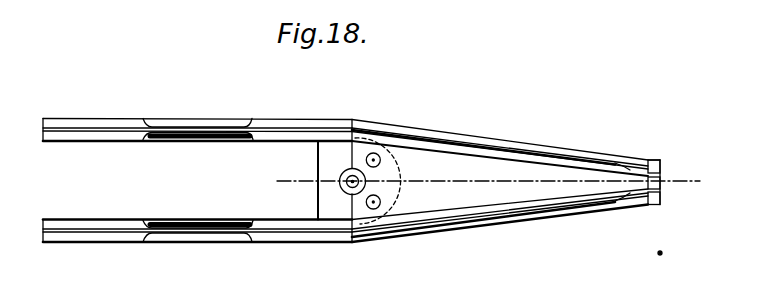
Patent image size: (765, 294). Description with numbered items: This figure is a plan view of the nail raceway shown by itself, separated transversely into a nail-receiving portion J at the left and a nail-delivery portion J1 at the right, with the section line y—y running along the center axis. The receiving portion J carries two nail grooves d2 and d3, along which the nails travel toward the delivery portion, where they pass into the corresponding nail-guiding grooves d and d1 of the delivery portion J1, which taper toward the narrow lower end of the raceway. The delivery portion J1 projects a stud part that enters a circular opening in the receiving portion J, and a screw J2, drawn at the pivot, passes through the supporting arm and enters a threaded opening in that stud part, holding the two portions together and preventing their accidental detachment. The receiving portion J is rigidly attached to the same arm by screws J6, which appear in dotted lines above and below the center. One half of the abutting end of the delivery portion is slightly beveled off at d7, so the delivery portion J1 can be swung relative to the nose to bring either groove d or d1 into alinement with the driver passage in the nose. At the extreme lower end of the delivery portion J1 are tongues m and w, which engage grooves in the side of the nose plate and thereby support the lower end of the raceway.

The nail-guiding groove d is at (618, 202).
The nail-guiding groove d1 is at (577, 162).
The groove of receiving portion d2 is at (207, 228).
The groove of receiving portion d3 is at (218, 128).
The beveled end d7 is at (352, 172).
The nail-receiving portion J is at (343, 181).
The nail-delivery portion J1 is at (437, 163).
The screw J2 is at (353, 178).
The screws J6 is at (374, 160).
The tongue m is at (648, 162).
The tongue w is at (658, 168).
The section line y is at (475, 183).